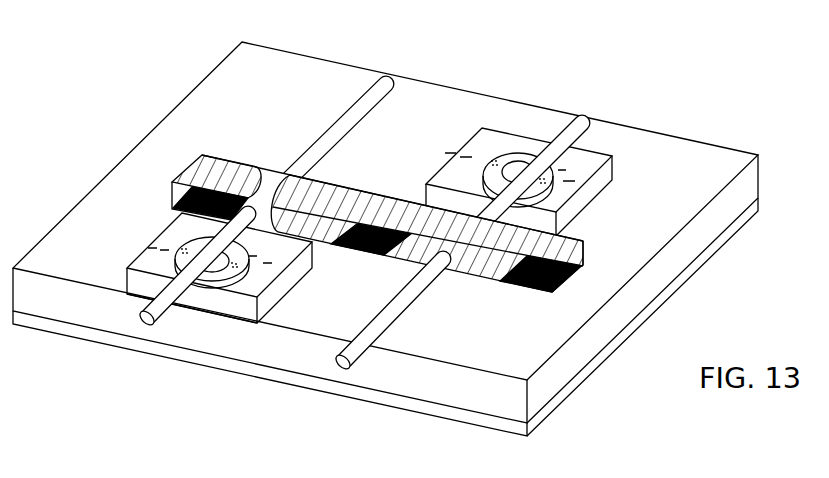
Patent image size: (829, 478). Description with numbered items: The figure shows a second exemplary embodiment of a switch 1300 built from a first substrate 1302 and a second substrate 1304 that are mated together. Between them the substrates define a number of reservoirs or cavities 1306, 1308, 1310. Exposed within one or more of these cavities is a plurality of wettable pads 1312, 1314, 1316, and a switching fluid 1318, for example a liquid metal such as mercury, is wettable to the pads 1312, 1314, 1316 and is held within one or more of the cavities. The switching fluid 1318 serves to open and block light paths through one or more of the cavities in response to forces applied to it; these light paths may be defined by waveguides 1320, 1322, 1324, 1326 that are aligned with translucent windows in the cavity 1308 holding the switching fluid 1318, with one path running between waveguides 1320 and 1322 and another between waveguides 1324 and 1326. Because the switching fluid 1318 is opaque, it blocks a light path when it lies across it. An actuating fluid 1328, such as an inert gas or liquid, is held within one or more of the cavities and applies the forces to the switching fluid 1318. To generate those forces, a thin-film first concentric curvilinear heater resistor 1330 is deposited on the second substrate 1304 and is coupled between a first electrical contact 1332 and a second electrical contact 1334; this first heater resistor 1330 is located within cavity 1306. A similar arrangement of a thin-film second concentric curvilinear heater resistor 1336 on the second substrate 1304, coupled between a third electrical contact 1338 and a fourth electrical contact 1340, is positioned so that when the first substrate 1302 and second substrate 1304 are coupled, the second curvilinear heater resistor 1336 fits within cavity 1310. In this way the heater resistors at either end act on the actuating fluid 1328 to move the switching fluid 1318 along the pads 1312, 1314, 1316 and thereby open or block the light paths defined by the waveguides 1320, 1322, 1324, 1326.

The switch 1300 is at (641, 59).
The first substrate 1302 is at (97, 183).
The second substrate 1304 is at (497, 438).
The cavity 1306 is at (125, 283).
The cavity 1308 is at (577, 285).
The cavity 1310 is at (615, 163).
The wettable pad 1312 is at (215, 184).
The wettable pad 1314 is at (370, 257).
The wettable pad 1316 is at (505, 283).
The switching fluid 1318 is at (231, 162).
The waveguide 1320 is at (167, 317).
The waveguide 1322 is at (362, 90).
The waveguide 1324 is at (363, 355).
The waveguide 1326 is at (563, 132).
The actuating fluid 1328 is at (467, 150).
The first concentric curvilinear heater resistor 1330 is at (207, 293).
The first electrical contact 1332 is at (178, 247).
The second electrical contact 1334 is at (248, 272).
The second concentric curvilinear heater resistor 1336 is at (518, 150).
The third electrical contact 1338 is at (497, 155).
The fourth electrical contact 1340 is at (562, 198).